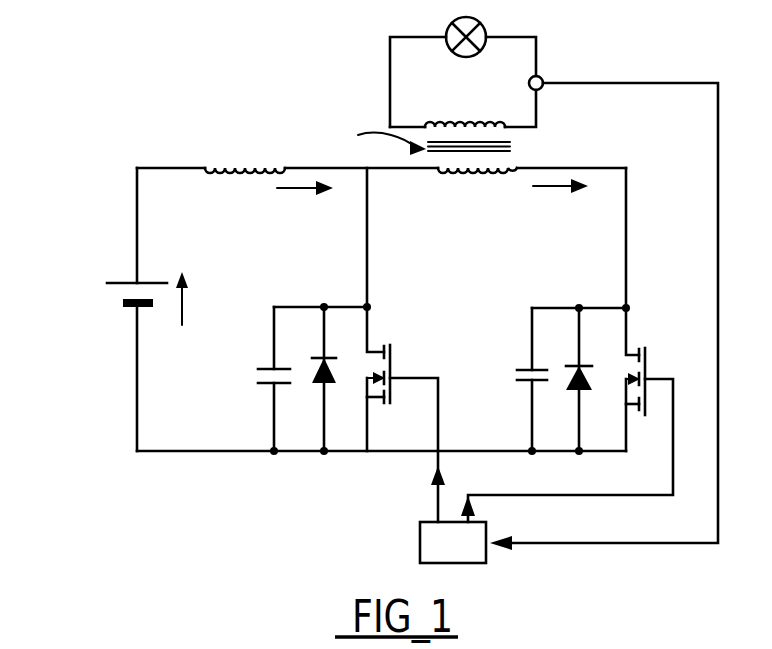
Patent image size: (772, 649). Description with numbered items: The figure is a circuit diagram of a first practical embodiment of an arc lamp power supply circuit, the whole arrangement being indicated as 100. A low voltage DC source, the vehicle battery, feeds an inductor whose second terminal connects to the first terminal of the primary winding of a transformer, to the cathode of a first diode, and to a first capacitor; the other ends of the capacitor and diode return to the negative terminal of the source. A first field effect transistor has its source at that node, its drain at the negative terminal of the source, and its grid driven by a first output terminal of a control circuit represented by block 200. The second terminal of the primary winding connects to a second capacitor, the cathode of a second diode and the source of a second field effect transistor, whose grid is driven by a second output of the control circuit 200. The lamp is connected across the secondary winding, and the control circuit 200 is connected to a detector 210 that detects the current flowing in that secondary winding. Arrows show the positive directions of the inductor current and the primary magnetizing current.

The lamp power supply circuit 100 is at (143, 144).
The control circuit 200 is at (477, 558).
The detector 210 is at (543, 76).